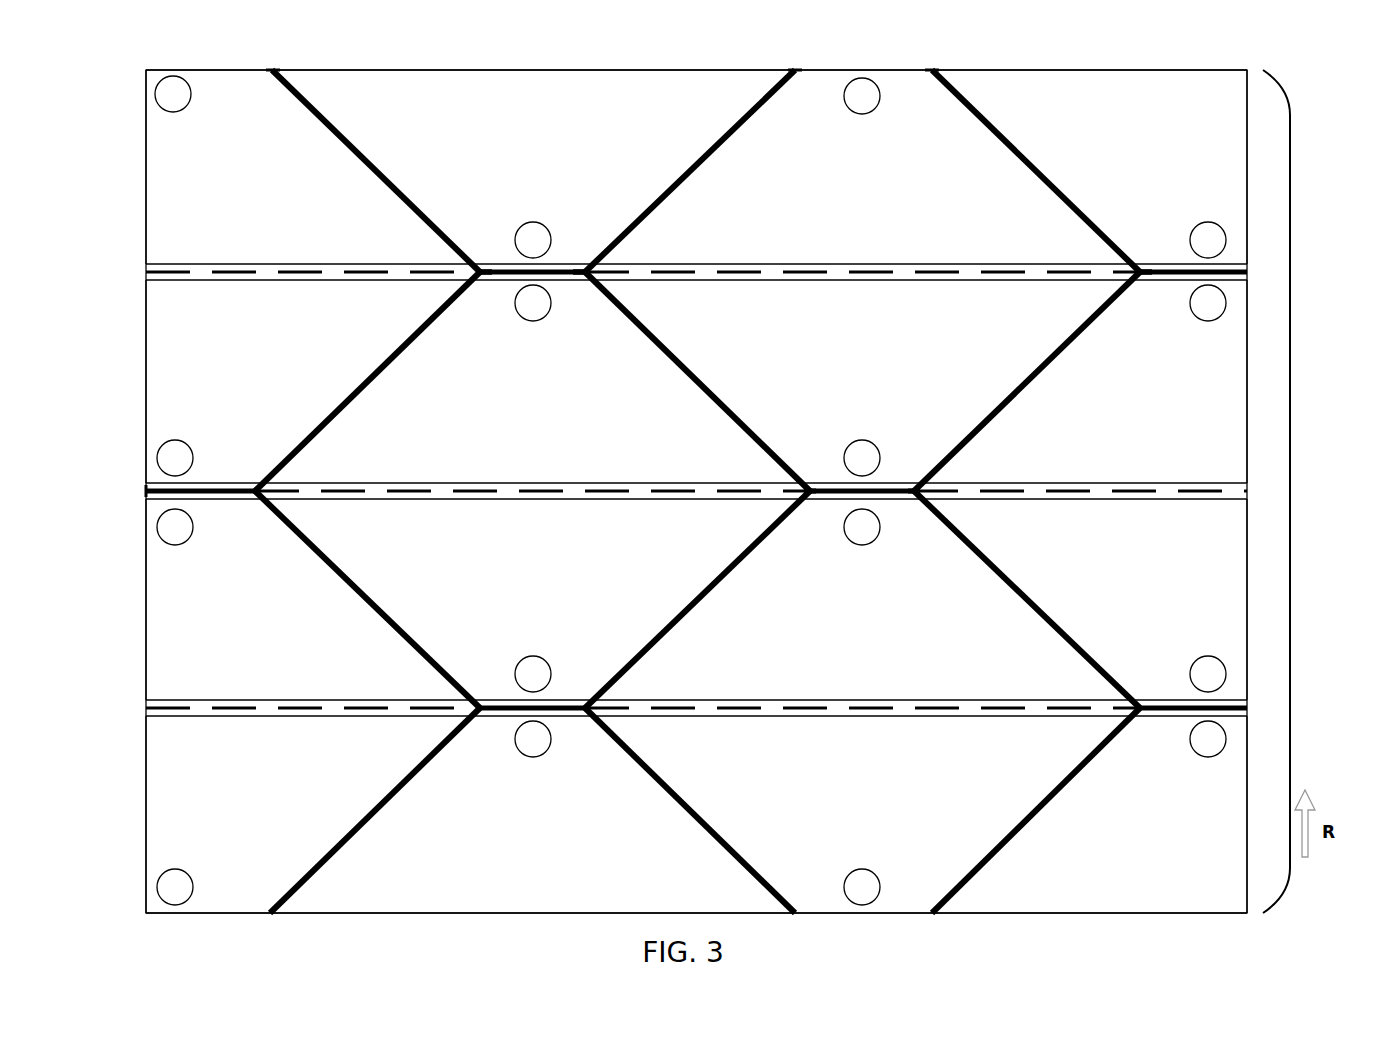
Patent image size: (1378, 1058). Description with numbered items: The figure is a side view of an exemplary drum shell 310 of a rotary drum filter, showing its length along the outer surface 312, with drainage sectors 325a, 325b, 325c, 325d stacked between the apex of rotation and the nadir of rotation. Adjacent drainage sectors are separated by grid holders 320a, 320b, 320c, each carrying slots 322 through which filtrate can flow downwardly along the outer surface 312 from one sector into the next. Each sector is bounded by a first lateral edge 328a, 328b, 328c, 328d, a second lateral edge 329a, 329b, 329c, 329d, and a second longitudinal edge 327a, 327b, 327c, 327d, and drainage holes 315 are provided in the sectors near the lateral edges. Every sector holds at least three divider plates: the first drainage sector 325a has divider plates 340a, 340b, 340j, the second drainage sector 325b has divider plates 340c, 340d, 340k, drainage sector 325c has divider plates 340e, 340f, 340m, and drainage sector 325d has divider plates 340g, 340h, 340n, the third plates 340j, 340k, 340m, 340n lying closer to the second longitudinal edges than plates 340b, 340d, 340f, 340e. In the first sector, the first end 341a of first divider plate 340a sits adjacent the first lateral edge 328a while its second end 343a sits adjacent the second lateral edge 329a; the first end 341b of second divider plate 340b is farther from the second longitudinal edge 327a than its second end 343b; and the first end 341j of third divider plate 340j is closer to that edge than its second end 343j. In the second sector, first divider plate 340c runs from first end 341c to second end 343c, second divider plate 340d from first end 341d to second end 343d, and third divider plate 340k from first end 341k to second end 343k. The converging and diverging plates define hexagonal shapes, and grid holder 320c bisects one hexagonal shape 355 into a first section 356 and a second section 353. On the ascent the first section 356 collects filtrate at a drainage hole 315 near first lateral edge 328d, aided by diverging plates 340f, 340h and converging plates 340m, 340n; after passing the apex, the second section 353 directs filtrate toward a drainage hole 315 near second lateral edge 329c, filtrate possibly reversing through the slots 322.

The drum shell 310 is at (130, 80).
The outer surface 312 is at (1290, 497).
The drainage holes 315 is at (178, 113).
The grid holder 320a is at (696, 272).
The grid holder 320b is at (696, 491).
The grid holder 320c is at (696, 710).
The slots 322 is at (735, 268).
The first drainage sector 325a is at (192, 205).
The second drainage sector 325b is at (192, 354).
The drainage sector 325c is at (198, 620).
The drainage sector 325d is at (193, 785).
The second longitudinal edge 327a is at (1245, 128).
The second longitudinal edge 327b is at (1245, 460).
The second longitudinal edge 327c is at (1245, 556).
The second longitudinal edge 327d is at (1245, 858).
The first lateral edge 328a is at (888, 260).
The first lateral edge 328b is at (1098, 480).
The first lateral edge 328c is at (775, 697).
The first lateral edge 328d is at (705, 908).
The second lateral edge 329a is at (1062, 80).
The second lateral edge 329b is at (921, 286).
The second lateral edge 329c is at (708, 505).
The second lateral edge 329d is at (773, 722).
The first divider plate 340a is at (395, 185).
The second divider plate 340b is at (690, 172).
The first divider plate 340c is at (350, 398).
The second divider plate 340d is at (712, 394).
The divider plate 340e is at (393, 624).
The divider plate 340f is at (675, 621).
The divider plate 340g is at (302, 882).
The divider plate 340h is at (742, 858).
The third divider plate 340j is at (1050, 185).
The third divider plate 340k is at (1015, 394).
The third divider plate 340m is at (1048, 620).
The third divider plate 340n is at (1005, 840).
The first end 341a is at (480, 265).
The first end 341b is at (586, 265).
The first end 341c is at (480, 280).
The first end 341d is at (587, 280).
The first end 341j is at (1140, 265).
The first end 341k is at (1142, 280).
The second end 343a is at (274, 76).
The second end 343b is at (794, 76).
The second end 343c is at (256, 485).
The second end 343d is at (808, 485).
The second end 343j is at (934, 76).
The second end 343k is at (915, 485).
The second section 353 is at (857, 633).
The hexagonal shape 355 is at (1070, 804).
The first section 356 is at (857, 783).